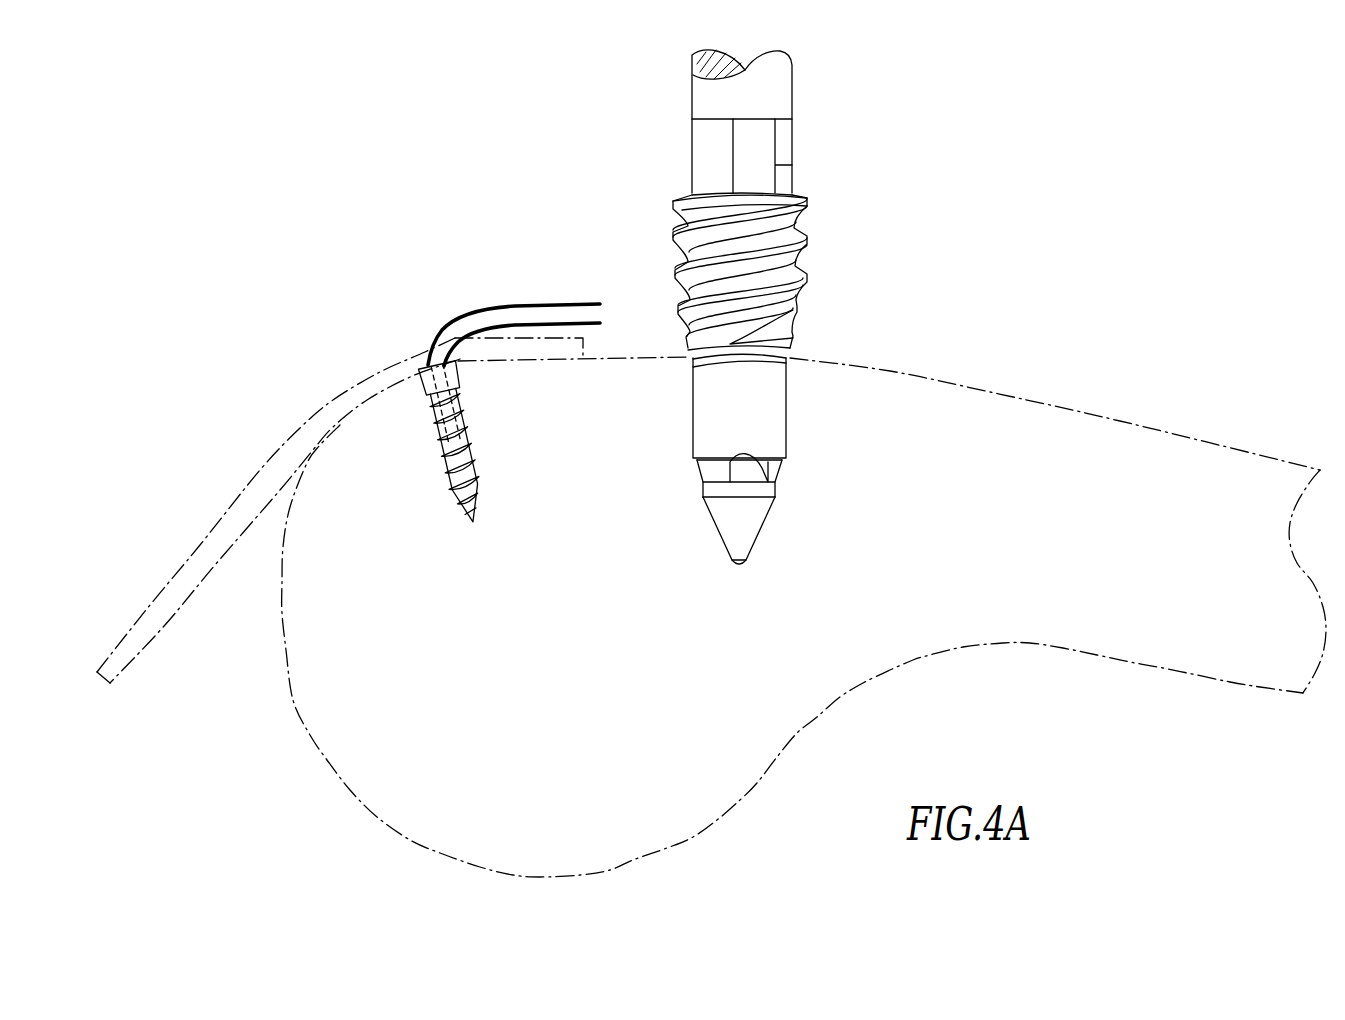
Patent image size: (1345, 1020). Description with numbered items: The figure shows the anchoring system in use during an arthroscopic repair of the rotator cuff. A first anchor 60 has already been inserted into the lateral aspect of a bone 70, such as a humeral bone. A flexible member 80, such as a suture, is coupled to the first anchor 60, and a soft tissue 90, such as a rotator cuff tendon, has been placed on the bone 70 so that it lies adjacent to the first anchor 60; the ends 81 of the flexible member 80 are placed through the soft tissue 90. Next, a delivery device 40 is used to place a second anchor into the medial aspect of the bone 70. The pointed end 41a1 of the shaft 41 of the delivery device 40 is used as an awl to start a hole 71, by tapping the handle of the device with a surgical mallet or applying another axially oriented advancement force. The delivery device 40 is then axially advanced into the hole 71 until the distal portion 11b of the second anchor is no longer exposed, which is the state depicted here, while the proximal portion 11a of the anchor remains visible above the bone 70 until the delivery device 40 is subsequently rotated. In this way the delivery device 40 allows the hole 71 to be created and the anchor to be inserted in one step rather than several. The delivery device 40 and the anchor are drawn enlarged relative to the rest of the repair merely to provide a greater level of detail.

The delivery device 40 is at (776, 92).
The shaft 41 is at (788, 160).
The proximal portion 11a is at (783, 299).
The distal portion 11b is at (778, 403).
The hole 71 is at (776, 490).
The pointed end 41a1 is at (750, 525).
The flexible member 80 is at (529, 304).
The ends 81 is at (556, 303).
The first anchor 60 is at (474, 458).
The bone 70 is at (290, 615).
The soft tissue 90 is at (153, 597).